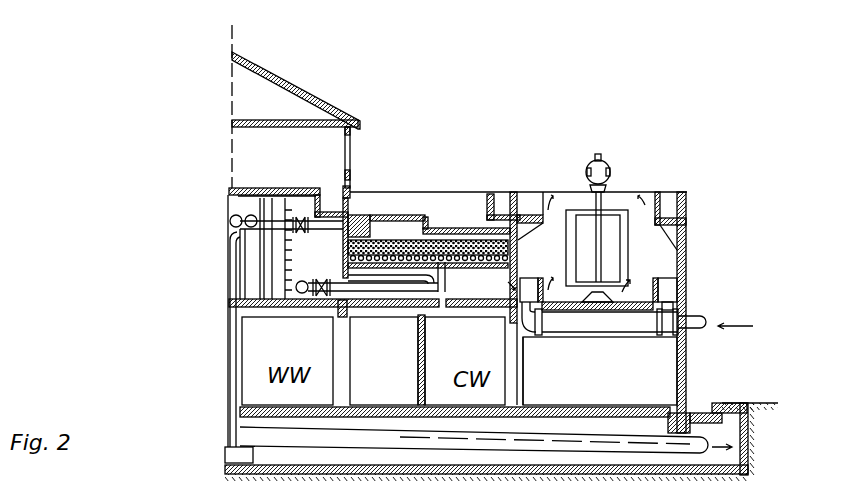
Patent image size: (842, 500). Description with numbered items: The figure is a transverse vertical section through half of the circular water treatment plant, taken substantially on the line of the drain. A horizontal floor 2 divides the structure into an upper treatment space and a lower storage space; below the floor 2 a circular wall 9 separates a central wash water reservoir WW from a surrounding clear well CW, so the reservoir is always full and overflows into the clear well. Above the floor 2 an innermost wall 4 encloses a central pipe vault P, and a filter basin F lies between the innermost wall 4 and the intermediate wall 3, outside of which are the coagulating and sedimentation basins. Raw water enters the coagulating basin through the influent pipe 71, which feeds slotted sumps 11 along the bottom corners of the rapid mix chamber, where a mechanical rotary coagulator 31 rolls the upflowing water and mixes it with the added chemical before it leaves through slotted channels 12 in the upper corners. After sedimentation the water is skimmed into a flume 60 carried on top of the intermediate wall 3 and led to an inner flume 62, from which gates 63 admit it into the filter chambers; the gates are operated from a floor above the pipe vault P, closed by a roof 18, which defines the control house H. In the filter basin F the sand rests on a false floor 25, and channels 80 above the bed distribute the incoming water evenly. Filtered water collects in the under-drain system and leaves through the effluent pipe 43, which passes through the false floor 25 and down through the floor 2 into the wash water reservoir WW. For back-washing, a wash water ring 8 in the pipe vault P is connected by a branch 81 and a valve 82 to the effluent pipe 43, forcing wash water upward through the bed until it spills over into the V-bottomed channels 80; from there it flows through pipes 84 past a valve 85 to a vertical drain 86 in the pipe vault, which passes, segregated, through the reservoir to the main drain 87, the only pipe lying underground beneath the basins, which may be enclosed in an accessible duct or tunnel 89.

The control house H is at (238, 150).
The roof 18 is at (299, 92).
The gates 63 is at (350, 197).
The inner circular flume 62 is at (332, 190).
The innermost wall 4 is at (360, 227).
The pipe vault P is at (257, 240).
The valve 85 is at (240, 257).
The pipes 84 is at (331, 230).
The vertical drain 86 is at (231, 282).
The filter basin F is at (410, 202).
The channels 80 is at (443, 230).
The false floor 25 is at (467, 270).
The flume 60 is at (503, 195).
The channels 12 is at (532, 202).
The intermediate wall 3 is at (519, 246).
The mechanical rotary coagulator 31 is at (627, 220).
The sumps 11 is at (674, 296).
The floor 2 is at (570, 310).
The influent pipe 71 is at (605, 330).
The circular wall 9 is at (418, 360).
The branch 81 is at (372, 302).
The valve 82 is at (322, 302).
The wash water ring 8 is at (303, 303).
The effluent pipe 43 is at (437, 305).
The duct or tunnel 89 is at (545, 467).
The main drain 87 is at (428, 438).